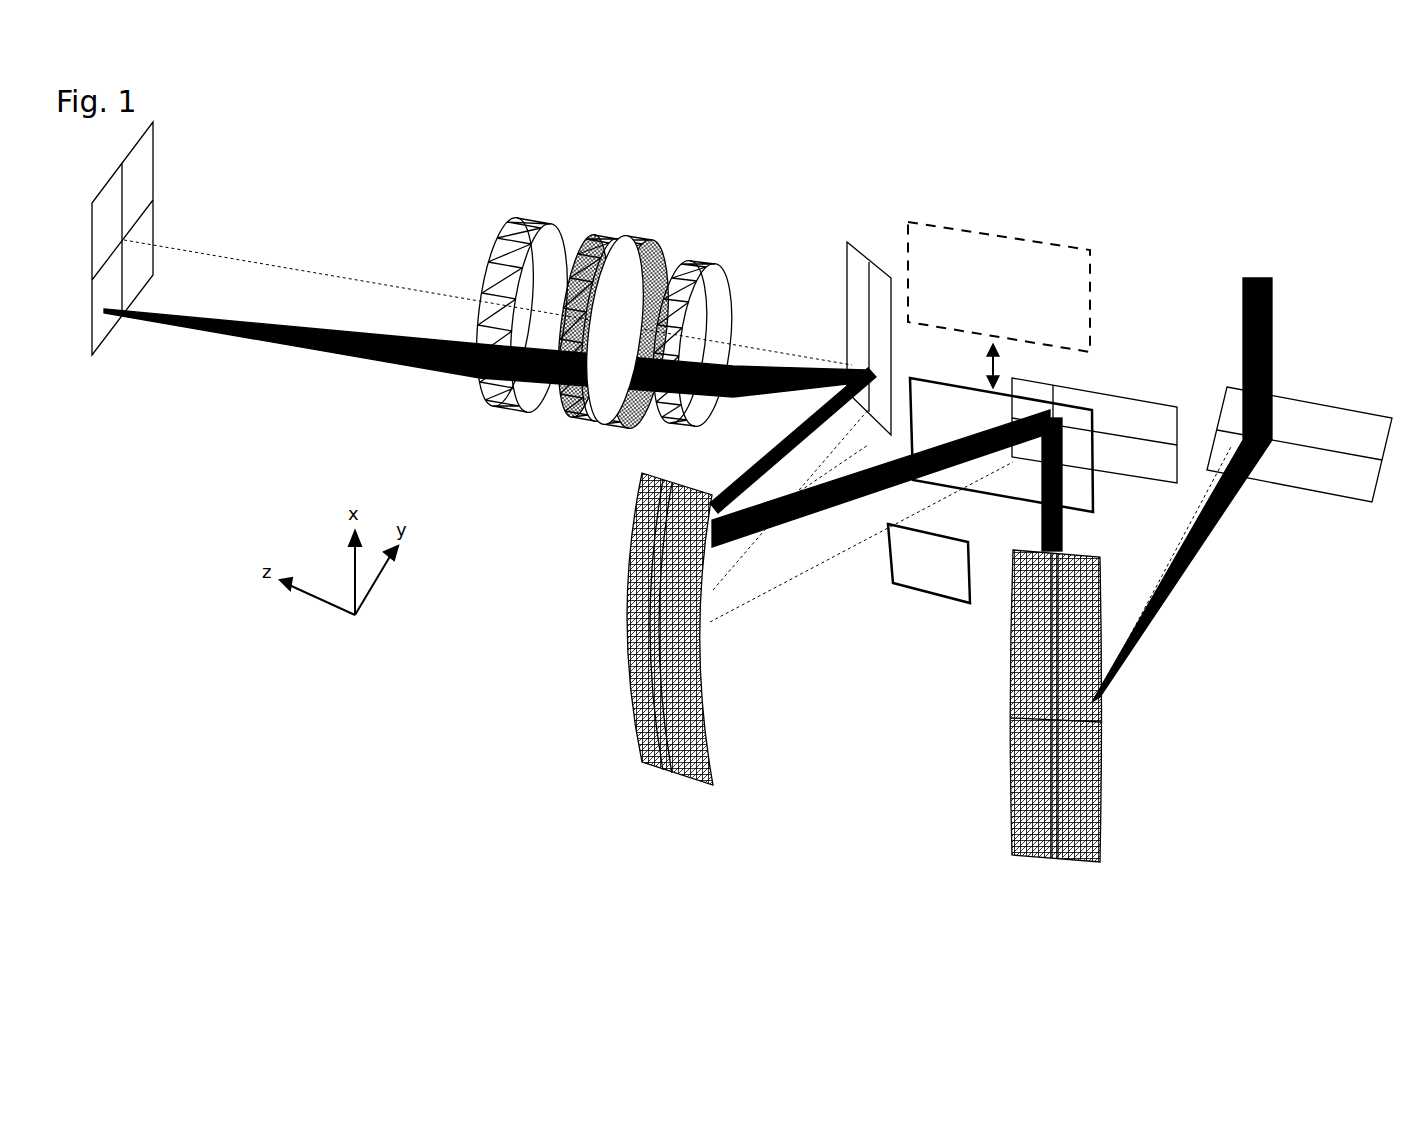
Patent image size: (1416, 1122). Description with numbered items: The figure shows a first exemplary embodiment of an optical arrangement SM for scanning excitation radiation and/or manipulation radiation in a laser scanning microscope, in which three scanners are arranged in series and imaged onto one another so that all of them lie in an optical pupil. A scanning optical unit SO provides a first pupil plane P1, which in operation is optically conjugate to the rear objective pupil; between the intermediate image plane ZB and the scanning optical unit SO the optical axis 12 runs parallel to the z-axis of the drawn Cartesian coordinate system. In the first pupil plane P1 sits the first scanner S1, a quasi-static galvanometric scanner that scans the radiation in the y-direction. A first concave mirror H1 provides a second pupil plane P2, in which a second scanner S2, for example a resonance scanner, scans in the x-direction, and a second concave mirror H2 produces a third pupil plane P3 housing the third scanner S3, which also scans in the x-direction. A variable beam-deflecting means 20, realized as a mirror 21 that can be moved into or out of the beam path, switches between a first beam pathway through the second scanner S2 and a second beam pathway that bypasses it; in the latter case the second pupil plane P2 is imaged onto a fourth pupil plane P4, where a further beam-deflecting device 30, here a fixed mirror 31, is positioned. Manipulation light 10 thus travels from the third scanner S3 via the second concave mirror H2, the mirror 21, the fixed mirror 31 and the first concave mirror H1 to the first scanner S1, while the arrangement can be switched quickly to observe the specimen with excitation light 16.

The intermediate image plane ZB is at (102, 356).
The optical axis 12 is at (297, 272).
The manipulation radiation 10 is at (745, 490).
The excitation light 16 is at (262, 338).
The scanning optical unit SO is at (584, 240).
The first scanner S1 is at (856, 310).
The first pupil plane P1 is at (856, 260).
The variable beam-deflecting means 20 is at (1016, 266).
The mirror 21 is at (1078, 492).
The second scanner S2 is at (1098, 410).
The second pupil plane P2 is at (1167, 409).
The third scanner S3 is at (1305, 428).
The third pupil plane P3 is at (1373, 426).
The further beam-deflecting device 30 is at (919, 592).
The fixed mirror 31 is at (919, 592).
The fourth pupil plane P4 is at (915, 585).
The first concave mirror H1 is at (713, 730).
The second concave mirror H2 is at (1100, 783).
The optical arrangement SM is at (232, 752).